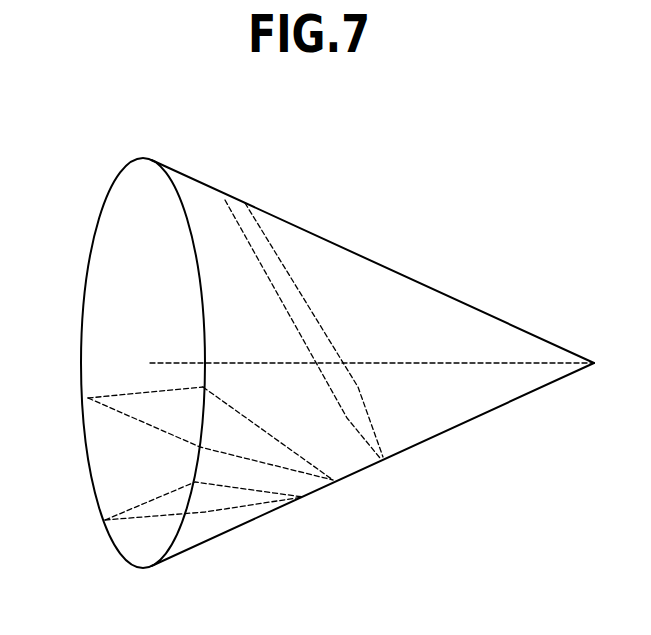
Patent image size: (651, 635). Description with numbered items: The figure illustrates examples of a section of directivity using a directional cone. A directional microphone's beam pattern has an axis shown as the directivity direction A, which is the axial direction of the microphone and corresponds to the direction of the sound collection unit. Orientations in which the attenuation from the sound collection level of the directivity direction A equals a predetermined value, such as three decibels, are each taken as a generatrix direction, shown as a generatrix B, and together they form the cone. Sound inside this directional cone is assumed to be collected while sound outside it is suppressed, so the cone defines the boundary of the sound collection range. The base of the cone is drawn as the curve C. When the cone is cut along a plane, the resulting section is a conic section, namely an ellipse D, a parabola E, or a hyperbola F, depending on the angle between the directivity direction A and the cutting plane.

The directivity direction A is at (537, 363).
The generatrix B is at (408, 271).
The base circle of cone C is at (79, 342).
The ellipse D is at (377, 432).
The parabola E is at (323, 462).
The hyperbola F is at (217, 513).